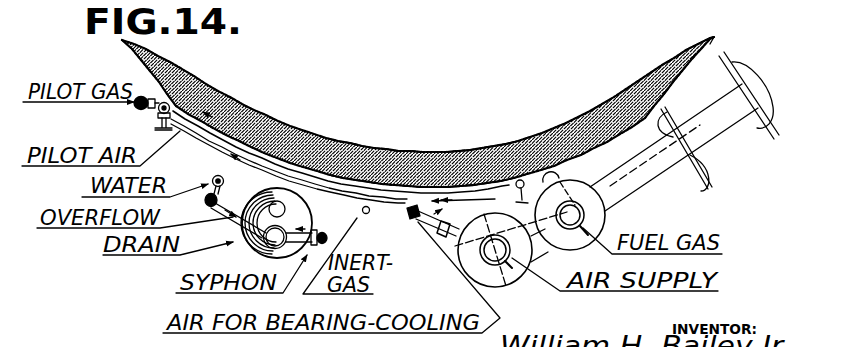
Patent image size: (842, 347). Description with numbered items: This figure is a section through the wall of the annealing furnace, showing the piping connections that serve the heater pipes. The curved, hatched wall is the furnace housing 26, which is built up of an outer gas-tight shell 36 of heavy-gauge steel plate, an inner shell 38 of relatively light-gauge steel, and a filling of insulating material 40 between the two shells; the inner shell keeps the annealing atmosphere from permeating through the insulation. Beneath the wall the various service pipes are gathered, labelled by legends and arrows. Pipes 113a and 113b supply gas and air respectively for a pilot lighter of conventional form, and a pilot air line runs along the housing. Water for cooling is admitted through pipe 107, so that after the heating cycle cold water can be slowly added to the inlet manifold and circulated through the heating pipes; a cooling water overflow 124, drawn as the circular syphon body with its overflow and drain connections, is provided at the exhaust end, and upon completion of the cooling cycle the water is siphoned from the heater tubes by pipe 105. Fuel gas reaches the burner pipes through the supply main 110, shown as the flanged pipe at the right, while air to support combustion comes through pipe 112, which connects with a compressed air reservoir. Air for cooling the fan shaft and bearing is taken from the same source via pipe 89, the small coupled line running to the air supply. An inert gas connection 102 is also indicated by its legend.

The furnace housing 26 is at (427, 146).
The outer gas-tight shell 36 is at (714, 38).
The inner shell 38 is at (263, 113).
The insulating material 40 is at (572, 127).
The pipe 89 is at (416, 206).
The inert gas inlet 102 is at (367, 213).
The pipe 105 is at (352, 207).
The pipe 107 is at (216, 176).
The supply main 110 is at (584, 212).
The pipe 112 is at (504, 268).
The pipe 113a is at (137, 105).
The pipe 113b is at (157, 109).
The cooling water overflow 124 is at (312, 215).